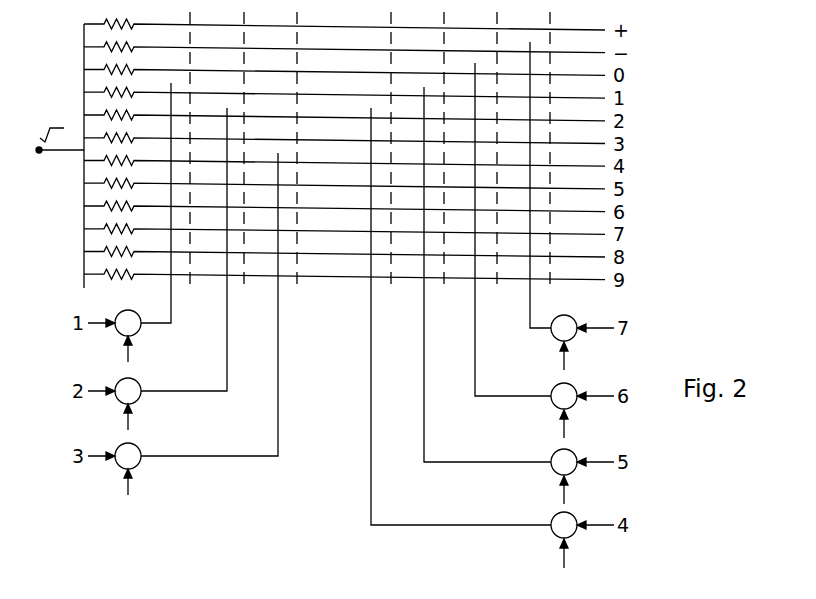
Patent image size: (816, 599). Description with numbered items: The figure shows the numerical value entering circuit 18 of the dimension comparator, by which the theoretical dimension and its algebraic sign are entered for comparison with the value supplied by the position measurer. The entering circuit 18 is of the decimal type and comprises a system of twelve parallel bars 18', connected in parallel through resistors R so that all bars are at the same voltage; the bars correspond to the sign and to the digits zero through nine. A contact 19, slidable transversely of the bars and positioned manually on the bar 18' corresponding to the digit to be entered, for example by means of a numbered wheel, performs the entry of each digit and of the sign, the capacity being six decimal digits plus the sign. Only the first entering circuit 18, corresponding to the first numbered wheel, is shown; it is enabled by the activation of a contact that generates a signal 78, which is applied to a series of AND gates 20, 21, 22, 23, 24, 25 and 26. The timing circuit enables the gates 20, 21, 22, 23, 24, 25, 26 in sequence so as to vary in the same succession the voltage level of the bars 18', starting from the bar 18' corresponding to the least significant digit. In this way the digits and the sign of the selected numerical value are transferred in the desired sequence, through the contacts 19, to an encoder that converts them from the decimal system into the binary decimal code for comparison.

The resistor R is at (116, 38).
The entering circuit 18 is at (656, 155).
The bar 18' is at (399, 159).
The contact 19 is at (171, 83).
The AND gate 20 is at (130, 311).
The AND gate 21 is at (137, 384).
The AND gate 22 is at (138, 464).
The AND gate 23 is at (552, 533).
The AND gate 24 is at (552, 454).
The AND gate 25 is at (552, 388).
The AND gate 26 is at (566, 316).
The signal 78 is at (342, 454).